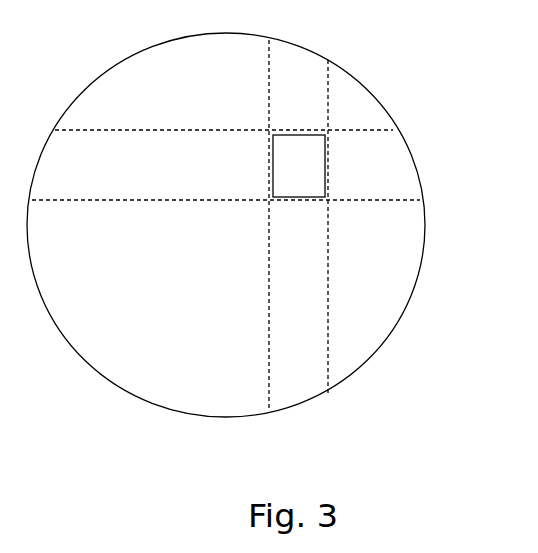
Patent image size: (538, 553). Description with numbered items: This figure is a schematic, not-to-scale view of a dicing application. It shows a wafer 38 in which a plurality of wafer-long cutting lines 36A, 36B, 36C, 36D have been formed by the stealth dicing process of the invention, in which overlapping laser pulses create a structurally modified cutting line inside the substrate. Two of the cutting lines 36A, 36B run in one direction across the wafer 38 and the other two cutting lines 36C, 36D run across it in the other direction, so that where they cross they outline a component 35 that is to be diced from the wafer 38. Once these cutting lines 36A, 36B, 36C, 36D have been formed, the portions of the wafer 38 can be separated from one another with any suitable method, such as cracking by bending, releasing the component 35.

The component 35 is at (308, 157).
The cutting line 36A is at (268, 393).
The cutting line 36B is at (328, 342).
The cutting line 36C is at (350, 200).
The cutting line 36D is at (377, 130).
The wafer 38 is at (369, 92).